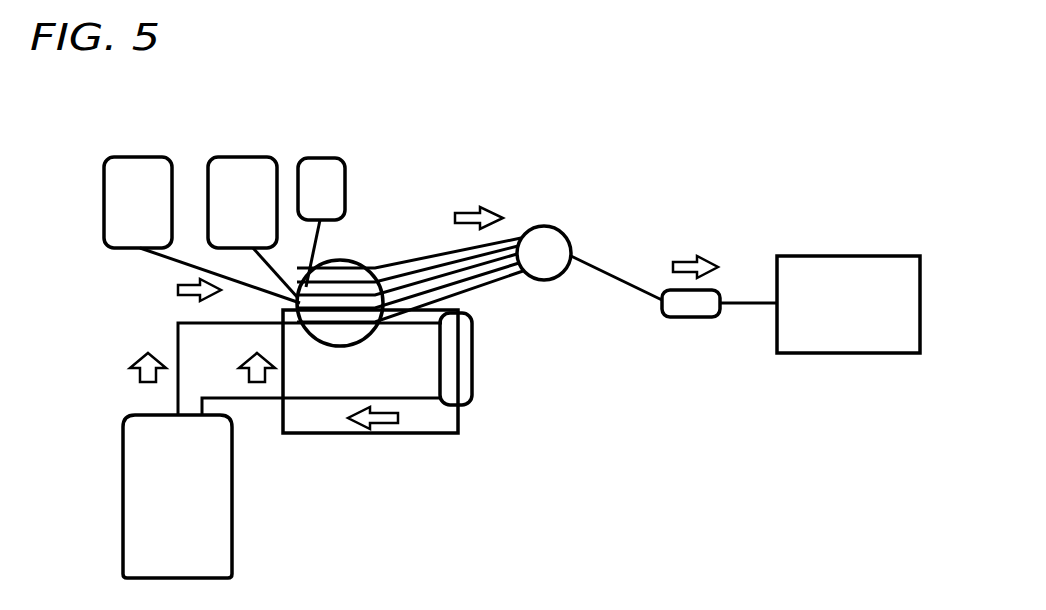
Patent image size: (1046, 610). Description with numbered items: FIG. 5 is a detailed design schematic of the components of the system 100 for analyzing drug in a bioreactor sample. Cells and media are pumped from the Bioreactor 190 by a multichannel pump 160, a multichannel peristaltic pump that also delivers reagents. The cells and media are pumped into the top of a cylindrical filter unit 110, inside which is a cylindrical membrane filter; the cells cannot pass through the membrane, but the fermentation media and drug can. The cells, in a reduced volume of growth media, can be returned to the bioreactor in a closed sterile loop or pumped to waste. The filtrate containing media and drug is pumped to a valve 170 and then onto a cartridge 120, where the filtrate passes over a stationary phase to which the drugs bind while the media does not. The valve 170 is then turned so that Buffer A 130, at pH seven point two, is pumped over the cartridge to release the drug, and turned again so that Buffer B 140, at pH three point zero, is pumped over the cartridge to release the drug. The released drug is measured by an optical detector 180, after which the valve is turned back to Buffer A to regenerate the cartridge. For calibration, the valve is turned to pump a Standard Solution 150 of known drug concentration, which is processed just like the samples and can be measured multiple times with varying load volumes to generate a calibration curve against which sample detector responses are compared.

The cell analysis system 100 is at (474, 170).
The filter unit 110 is at (475, 378).
The cartridge 120 is at (663, 290).
The Buffer A 130 is at (127, 158).
The Buffer B 140 is at (253, 158).
The Standard Solution 150 is at (313, 163).
The multichannel pump 160 is at (362, 262).
The valve 170 is at (537, 228).
The optical detector 180 is at (862, 255).
The Bioreactor 190 is at (232, 520).